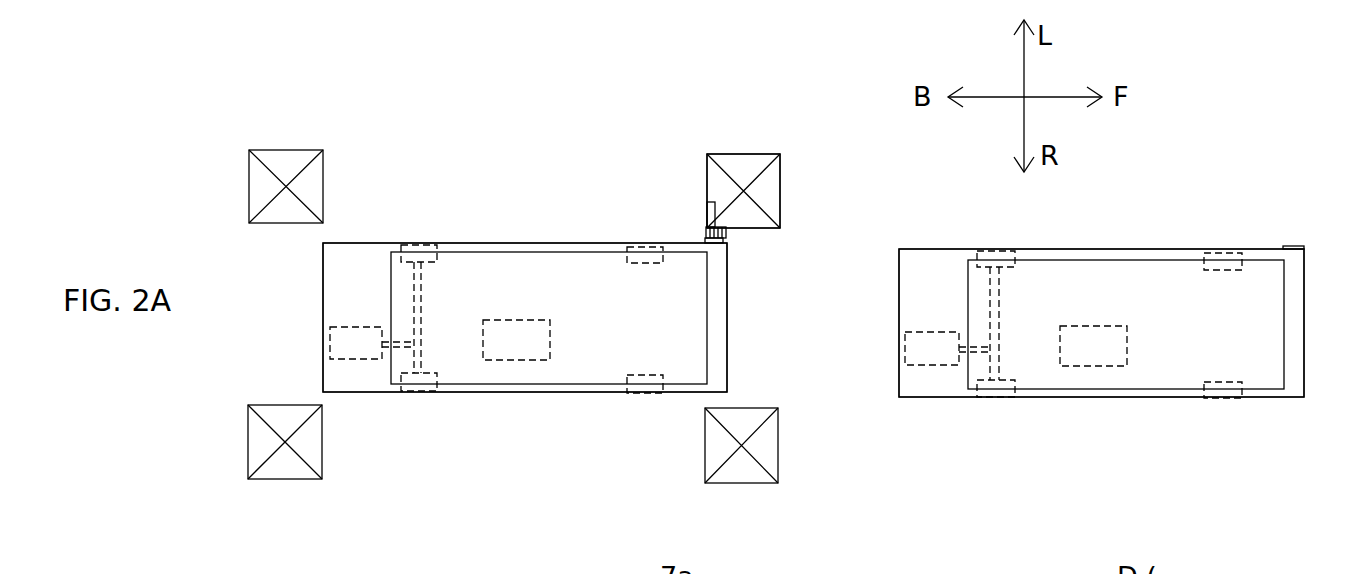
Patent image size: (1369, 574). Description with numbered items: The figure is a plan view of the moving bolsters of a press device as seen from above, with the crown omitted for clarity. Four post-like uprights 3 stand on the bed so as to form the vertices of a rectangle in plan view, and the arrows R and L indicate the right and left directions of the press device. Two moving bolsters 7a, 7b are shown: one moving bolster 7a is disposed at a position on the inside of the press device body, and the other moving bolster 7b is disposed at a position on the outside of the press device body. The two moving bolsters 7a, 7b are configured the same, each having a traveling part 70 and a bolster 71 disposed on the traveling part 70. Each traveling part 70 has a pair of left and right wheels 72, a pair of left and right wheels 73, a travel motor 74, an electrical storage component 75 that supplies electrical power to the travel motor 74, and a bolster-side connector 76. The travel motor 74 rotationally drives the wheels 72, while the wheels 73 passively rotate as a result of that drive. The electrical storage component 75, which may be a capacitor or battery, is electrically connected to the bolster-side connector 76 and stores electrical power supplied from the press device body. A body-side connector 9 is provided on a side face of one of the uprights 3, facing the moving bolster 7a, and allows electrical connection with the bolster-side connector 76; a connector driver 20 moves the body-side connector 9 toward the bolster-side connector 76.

The upright 3 is at (284, 152).
The moving bolster 7a is at (481, 242).
The moving bolster 7b is at (1142, 242).
The body-side connector 9 is at (755, 217).
The connector driver 20 is at (707, 200).
The traveling part 70 is at (362, 242).
The bolster 71 is at (391, 273).
The wheels 72 is at (431, 250).
The wheels 73 is at (633, 248).
The travel motor 74 is at (345, 347).
The electrical storage component 75 is at (510, 348).
The bolster-side connector 76 is at (733, 244).